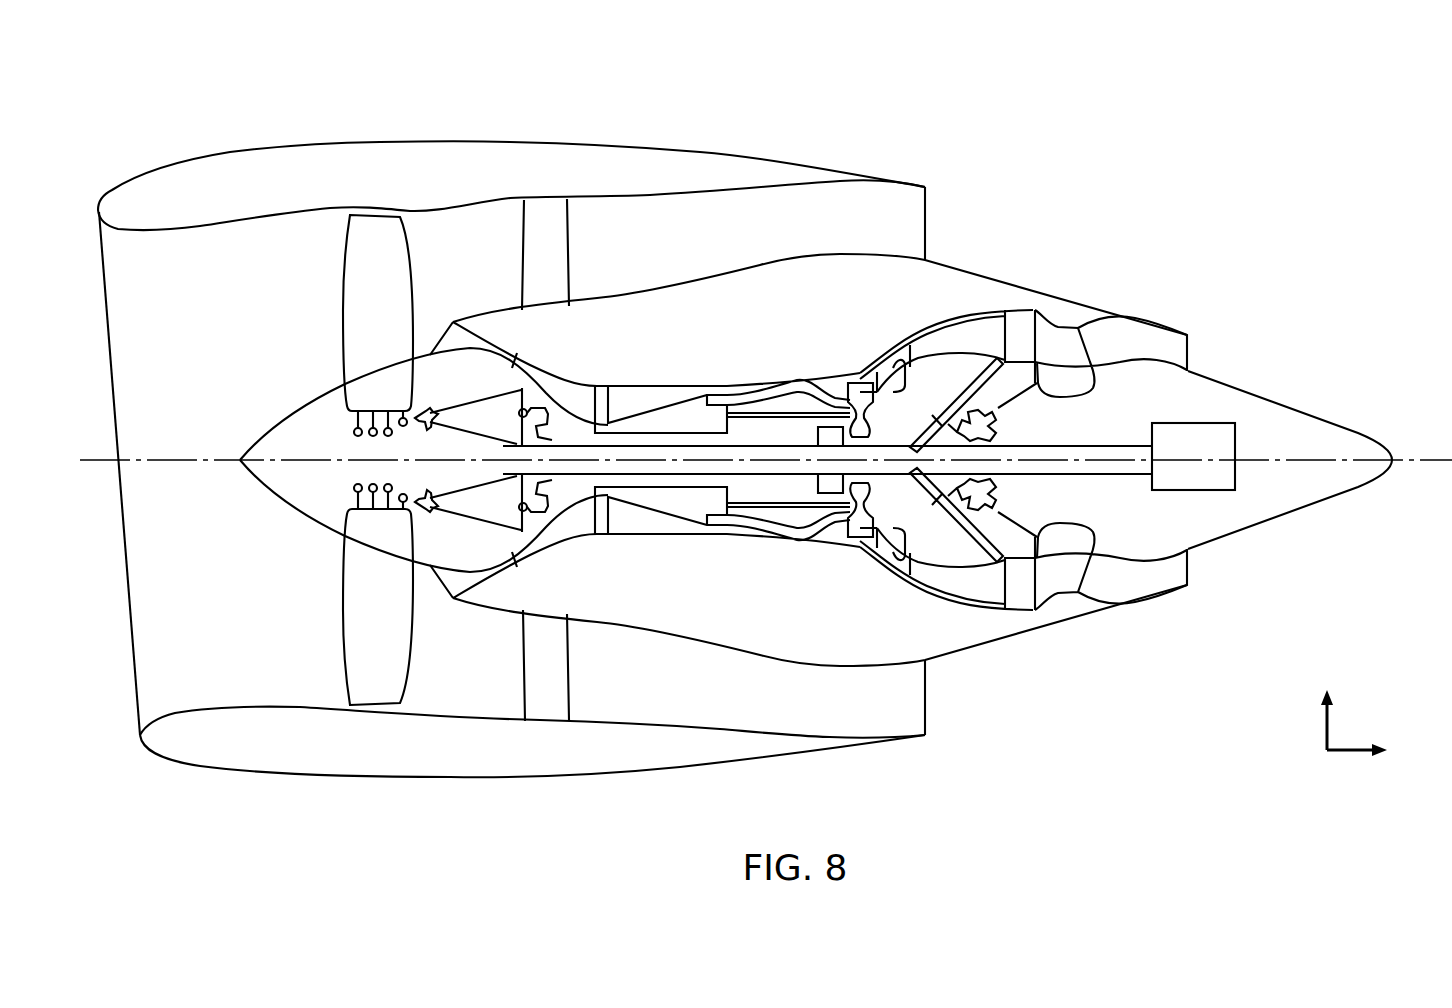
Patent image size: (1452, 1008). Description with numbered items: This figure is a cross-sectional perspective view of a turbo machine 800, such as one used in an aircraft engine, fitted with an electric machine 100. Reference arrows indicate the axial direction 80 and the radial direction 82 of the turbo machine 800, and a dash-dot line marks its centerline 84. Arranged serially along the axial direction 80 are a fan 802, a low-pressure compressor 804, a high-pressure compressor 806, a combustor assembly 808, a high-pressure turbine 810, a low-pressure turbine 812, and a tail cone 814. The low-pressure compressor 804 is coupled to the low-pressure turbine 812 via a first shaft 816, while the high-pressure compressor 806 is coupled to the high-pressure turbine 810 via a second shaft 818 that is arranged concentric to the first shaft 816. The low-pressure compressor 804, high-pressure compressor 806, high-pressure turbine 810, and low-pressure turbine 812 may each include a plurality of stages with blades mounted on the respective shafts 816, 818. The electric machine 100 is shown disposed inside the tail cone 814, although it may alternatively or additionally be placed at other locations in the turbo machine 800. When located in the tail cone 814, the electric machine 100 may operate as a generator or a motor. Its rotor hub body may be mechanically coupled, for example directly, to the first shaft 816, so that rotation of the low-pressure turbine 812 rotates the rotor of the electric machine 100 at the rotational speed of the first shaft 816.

The turbo machine 800 is at (1340, 85).
The fan 802 is at (357, 299).
The low-pressure compressor 804 is at (483, 340).
The high-pressure compressor 806 is at (627, 397).
The combustor assembly 808 is at (810, 388).
The high-pressure turbine 810 is at (863, 537).
The low-pressure turbine 812 is at (953, 333).
The tail cone 814 is at (1287, 404).
The first shaft 816 is at (662, 477).
The second shaft 818 is at (797, 507).
The electric machine 100 is at (1236, 472).
The axial direction 80 is at (1350, 753).
The radial direction 82 is at (1320, 728).
The centerline 84 is at (1407, 453).